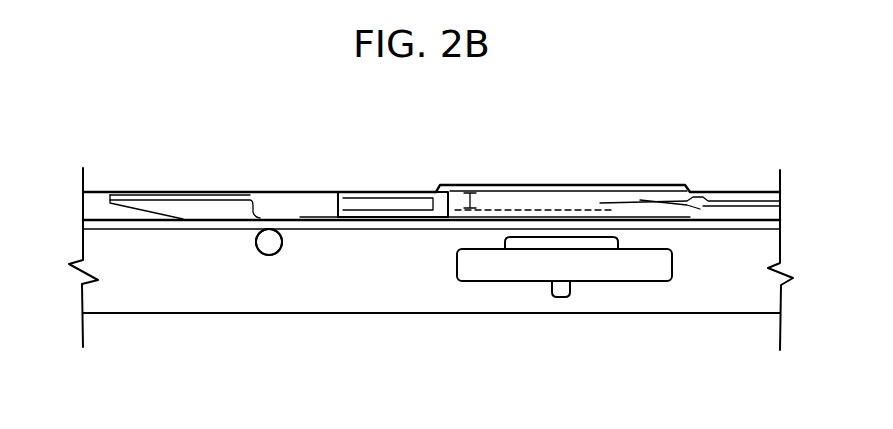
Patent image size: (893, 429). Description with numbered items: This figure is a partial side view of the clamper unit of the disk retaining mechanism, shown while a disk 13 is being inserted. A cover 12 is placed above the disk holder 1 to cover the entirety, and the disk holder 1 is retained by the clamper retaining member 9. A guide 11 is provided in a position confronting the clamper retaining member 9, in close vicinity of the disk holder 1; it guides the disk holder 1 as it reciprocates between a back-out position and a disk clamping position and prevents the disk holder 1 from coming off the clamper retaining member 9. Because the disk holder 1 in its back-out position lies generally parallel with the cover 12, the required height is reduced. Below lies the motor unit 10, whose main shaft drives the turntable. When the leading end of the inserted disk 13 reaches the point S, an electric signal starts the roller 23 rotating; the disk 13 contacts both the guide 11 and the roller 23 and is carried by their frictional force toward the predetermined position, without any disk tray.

The disk holder 1 is at (497, 200).
The clamper retaining member 9 is at (732, 200).
The motor unit 10 is at (643, 268).
The guide 11 is at (318, 203).
The cover 12 is at (128, 192).
The disk 13 is at (147, 223).
The roller 23 is at (270, 242).
The point S is at (270, 242).